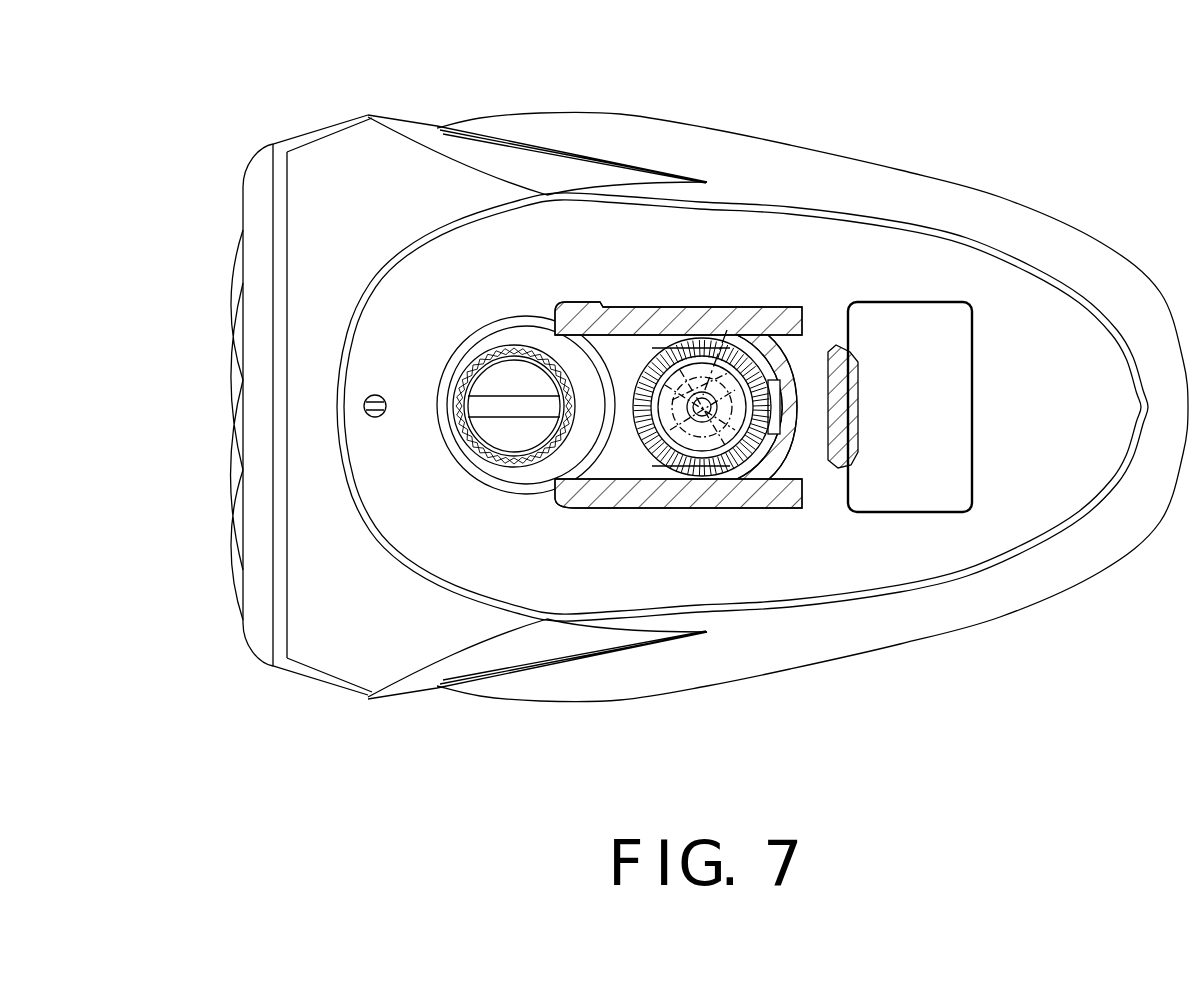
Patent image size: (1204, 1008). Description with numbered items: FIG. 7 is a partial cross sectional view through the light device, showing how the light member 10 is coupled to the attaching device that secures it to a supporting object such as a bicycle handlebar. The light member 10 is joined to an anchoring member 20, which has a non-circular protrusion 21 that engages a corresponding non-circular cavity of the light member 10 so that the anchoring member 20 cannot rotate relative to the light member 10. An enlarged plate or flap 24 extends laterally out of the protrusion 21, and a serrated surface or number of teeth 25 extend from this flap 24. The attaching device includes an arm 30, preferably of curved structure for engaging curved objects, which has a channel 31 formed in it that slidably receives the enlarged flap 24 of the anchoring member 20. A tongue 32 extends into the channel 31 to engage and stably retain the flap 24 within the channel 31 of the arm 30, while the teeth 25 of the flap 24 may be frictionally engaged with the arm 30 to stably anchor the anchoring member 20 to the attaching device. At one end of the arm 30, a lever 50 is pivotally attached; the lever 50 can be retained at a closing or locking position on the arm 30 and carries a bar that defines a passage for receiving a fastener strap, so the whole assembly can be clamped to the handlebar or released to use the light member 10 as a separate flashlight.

The light member 10 is at (398, 152).
The anchoring member 20 is at (682, 404).
The protrusion 21 is at (727, 330).
The enlarged flap 24 is at (645, 465).
The teeth 25 is at (703, 468).
The arm 30 is at (632, 390).
The channel 31 is at (583, 468).
The tongue 32 is at (772, 408).
The lever 50 is at (852, 437).